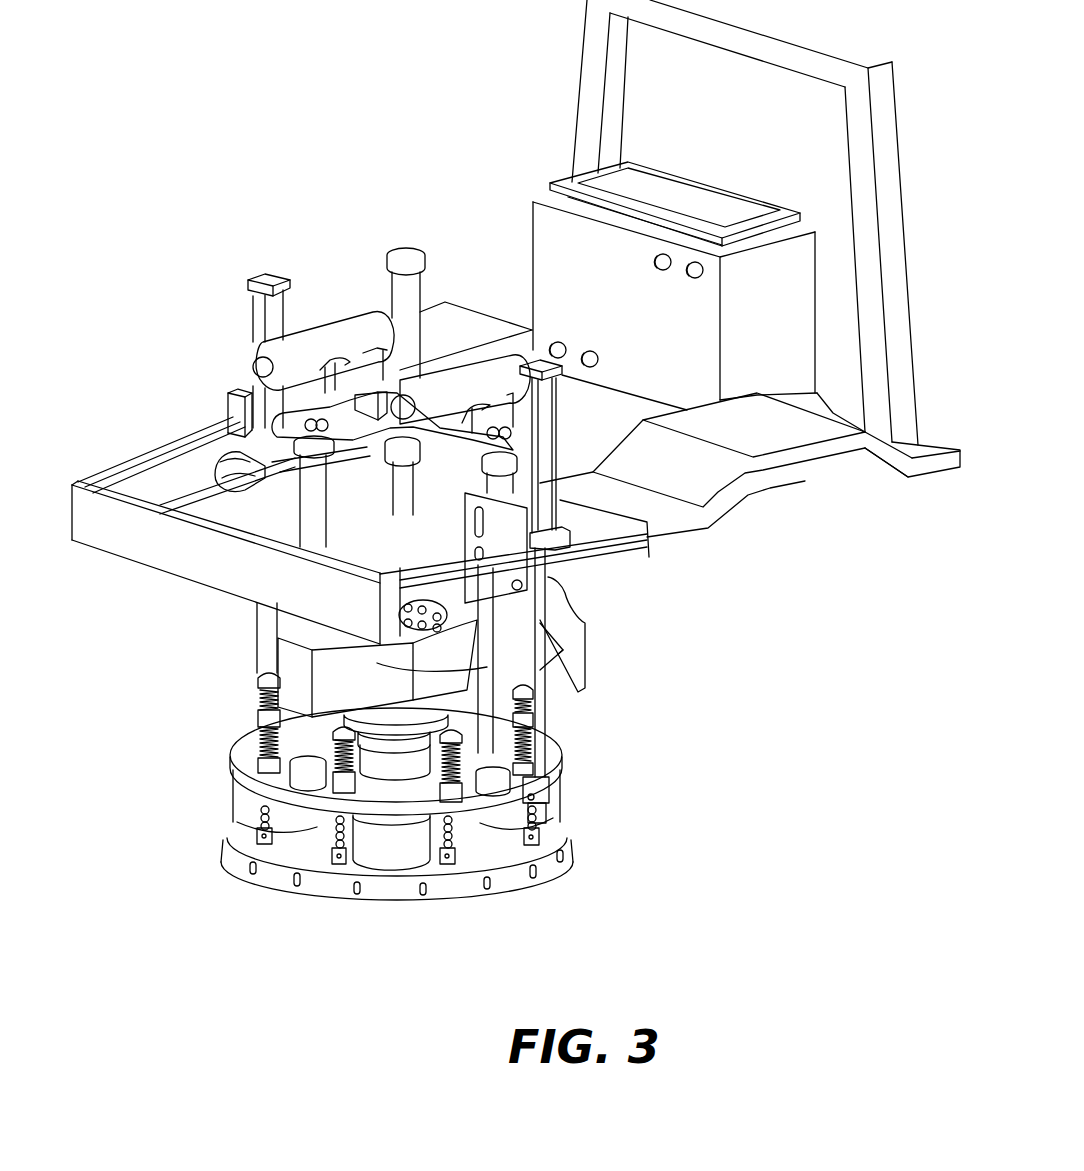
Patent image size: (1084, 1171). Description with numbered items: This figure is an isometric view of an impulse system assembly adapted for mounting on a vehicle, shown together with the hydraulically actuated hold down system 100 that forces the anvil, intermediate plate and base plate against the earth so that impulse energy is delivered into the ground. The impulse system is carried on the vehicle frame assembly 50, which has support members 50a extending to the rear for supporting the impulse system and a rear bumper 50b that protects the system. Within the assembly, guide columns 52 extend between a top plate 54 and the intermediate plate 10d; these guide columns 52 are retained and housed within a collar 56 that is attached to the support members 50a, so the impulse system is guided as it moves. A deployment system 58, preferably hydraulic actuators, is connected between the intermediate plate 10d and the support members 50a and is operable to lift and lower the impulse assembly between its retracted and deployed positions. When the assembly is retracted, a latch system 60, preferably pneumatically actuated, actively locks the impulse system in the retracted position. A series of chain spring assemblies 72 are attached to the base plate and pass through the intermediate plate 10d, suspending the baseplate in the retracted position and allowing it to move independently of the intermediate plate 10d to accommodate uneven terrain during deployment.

The hydraulically actuated hold down system 100 is at (127, 430).
The vehicle frame assembly 50 is at (938, 465).
The support members 50a is at (188, 433).
The rear bumper 50b is at (138, 542).
The guide columns 52 is at (308, 740).
The top plate 54 is at (287, 427).
The collar 56 is at (573, 545).
The deployment system 58 is at (278, 308).
The latch system 60 is at (587, 665).
The chain spring assemblies 72 is at (460, 781).
The intermediate plate 10d is at (565, 766).